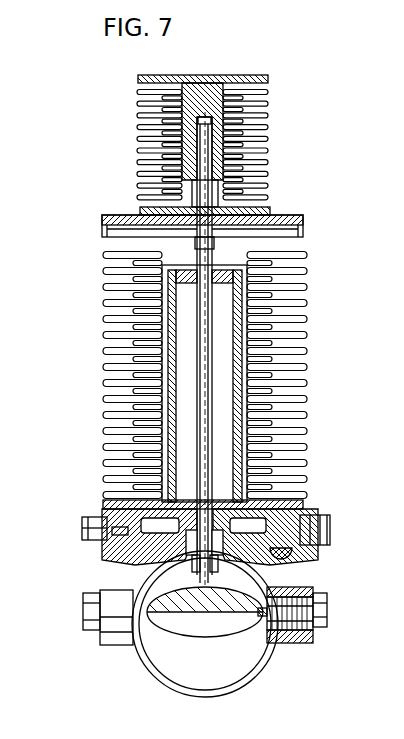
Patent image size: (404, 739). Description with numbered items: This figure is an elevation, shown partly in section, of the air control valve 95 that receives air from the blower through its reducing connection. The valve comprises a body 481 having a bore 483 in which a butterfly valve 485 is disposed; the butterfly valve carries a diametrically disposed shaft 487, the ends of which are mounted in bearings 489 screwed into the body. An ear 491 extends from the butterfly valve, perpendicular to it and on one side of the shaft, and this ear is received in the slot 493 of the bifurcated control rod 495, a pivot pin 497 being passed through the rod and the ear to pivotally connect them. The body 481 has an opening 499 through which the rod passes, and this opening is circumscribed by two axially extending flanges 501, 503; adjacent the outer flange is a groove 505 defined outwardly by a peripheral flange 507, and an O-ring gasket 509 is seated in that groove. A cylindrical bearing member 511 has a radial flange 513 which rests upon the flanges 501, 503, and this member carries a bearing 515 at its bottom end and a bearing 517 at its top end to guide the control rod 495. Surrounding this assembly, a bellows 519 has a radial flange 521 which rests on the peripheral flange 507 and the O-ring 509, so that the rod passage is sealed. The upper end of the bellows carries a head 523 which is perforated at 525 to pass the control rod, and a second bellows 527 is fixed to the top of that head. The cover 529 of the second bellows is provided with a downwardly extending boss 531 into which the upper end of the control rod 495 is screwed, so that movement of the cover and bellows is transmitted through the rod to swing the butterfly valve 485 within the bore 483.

The cover 529 is at (236, 77).
The boss 531 is at (224, 128).
The second bellows 527 is at (266, 122).
The head 523 is at (304, 228).
The perforation 525 is at (210, 238).
The bearing 517 is at (185, 266).
The control rod 495 is at (212, 328).
The bearing 515 is at (202, 478).
The bellows 519 is at (302, 376).
The cylindrical bearing member 511 is at (243, 412).
The radial flange 513 is at (282, 505).
The groove 505 is at (92, 548).
The peripheral flange 507 is at (80, 535).
The O-ring gasket 509 is at (115, 520).
The radial flange 521 is at (332, 520).
The air control valve 95 is at (322, 513).
The axially extending flange 503 is at (130, 518).
The axially extending flange 501 is at (272, 520).
The slot 493 is at (198, 535).
The opening 499 is at (270, 527).
The ear 491 is at (198, 581).
The pivot pin 497 is at (218, 566).
The bore 483 is at (183, 660).
The butterfly valve 485 is at (190, 624).
The body 481 is at (110, 645).
The shaft 487 is at (266, 620).
The bearings 489 is at (85, 617).